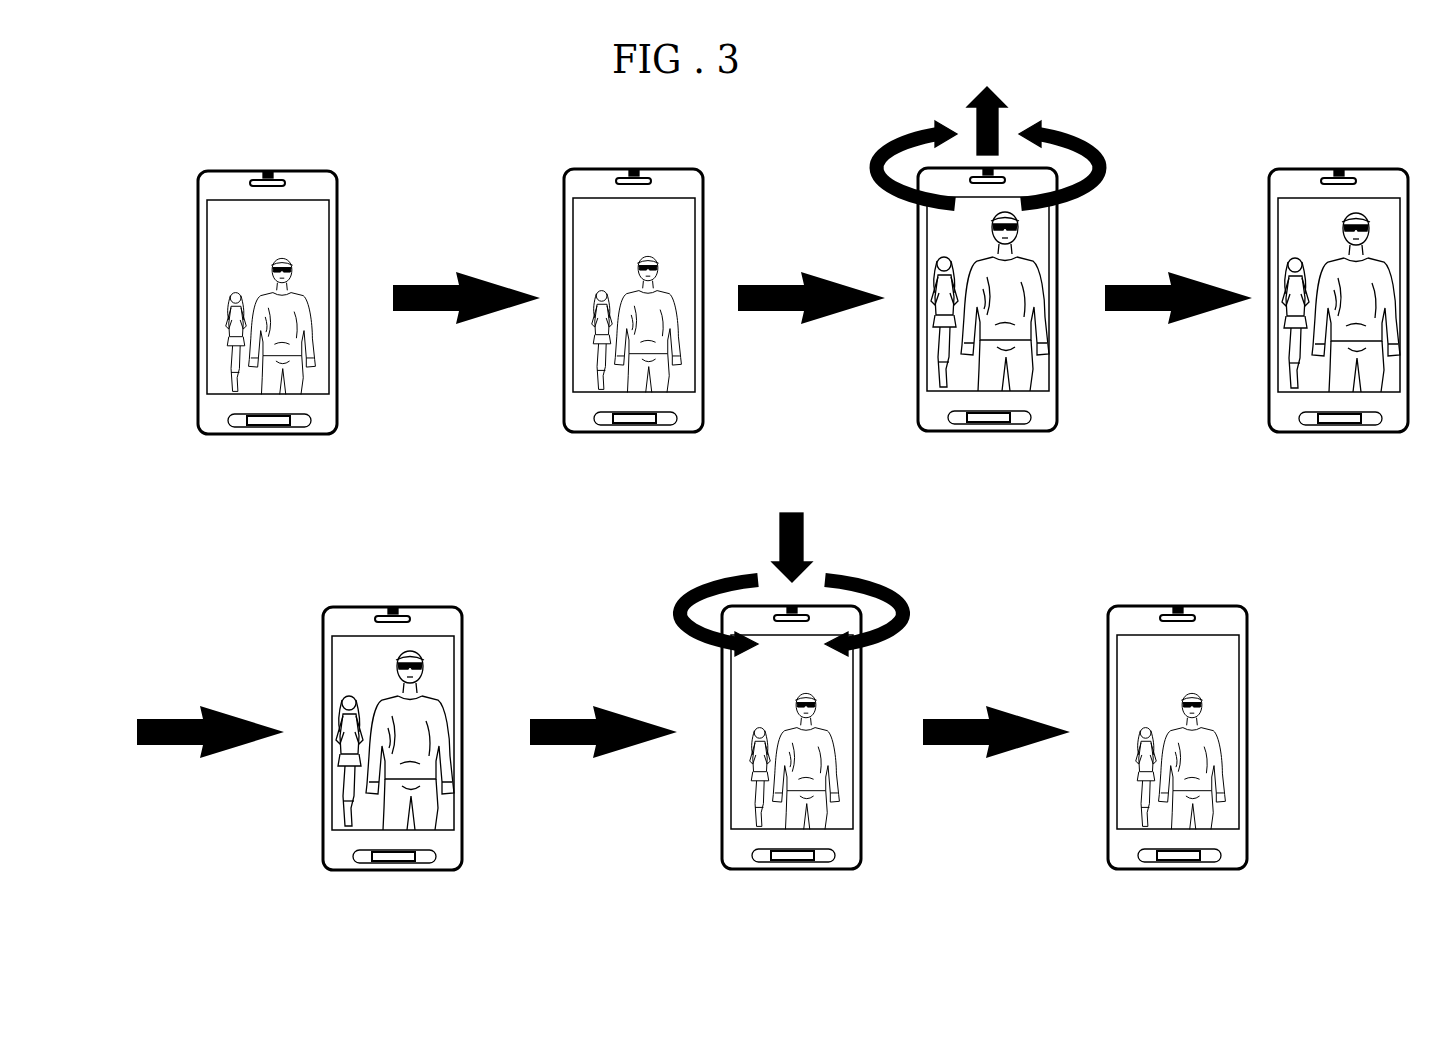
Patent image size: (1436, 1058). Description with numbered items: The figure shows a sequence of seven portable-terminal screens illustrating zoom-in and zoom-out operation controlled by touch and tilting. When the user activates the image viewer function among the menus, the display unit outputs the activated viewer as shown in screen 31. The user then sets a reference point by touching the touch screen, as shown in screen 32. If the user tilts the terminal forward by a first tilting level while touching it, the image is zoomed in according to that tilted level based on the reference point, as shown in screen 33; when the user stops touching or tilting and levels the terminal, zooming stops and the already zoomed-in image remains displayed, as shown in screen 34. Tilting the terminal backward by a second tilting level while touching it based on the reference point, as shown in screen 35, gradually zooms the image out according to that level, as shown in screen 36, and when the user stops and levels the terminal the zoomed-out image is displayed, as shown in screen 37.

The screen 31 is at (267, 335).
The screen 32 is at (633, 333).
The screen 33 is at (987, 332).
The screen 34 is at (1338, 333).
The screen 35 is at (392, 771).
The screen 36 is at (791, 770).
The screen 37 is at (1177, 770).